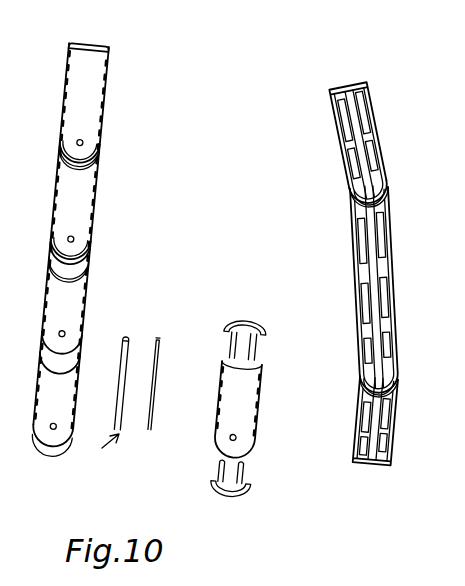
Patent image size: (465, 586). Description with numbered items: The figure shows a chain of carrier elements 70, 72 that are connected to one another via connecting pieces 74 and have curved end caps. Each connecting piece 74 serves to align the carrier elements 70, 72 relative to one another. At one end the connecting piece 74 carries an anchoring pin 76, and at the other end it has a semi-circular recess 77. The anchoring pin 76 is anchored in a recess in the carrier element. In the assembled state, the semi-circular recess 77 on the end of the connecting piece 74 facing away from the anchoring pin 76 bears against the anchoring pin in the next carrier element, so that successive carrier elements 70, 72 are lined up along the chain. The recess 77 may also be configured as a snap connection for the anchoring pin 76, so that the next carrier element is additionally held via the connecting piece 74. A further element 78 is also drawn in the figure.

The carrier element 70 is at (78, 111).
The carrier element 72 is at (70, 203).
The connecting piece 74 is at (122, 367).
The anchoring pin 76 is at (128, 333).
The semi-circular recess 77 is at (103, 464).
The connecting sleeve 78 is at (235, 440).